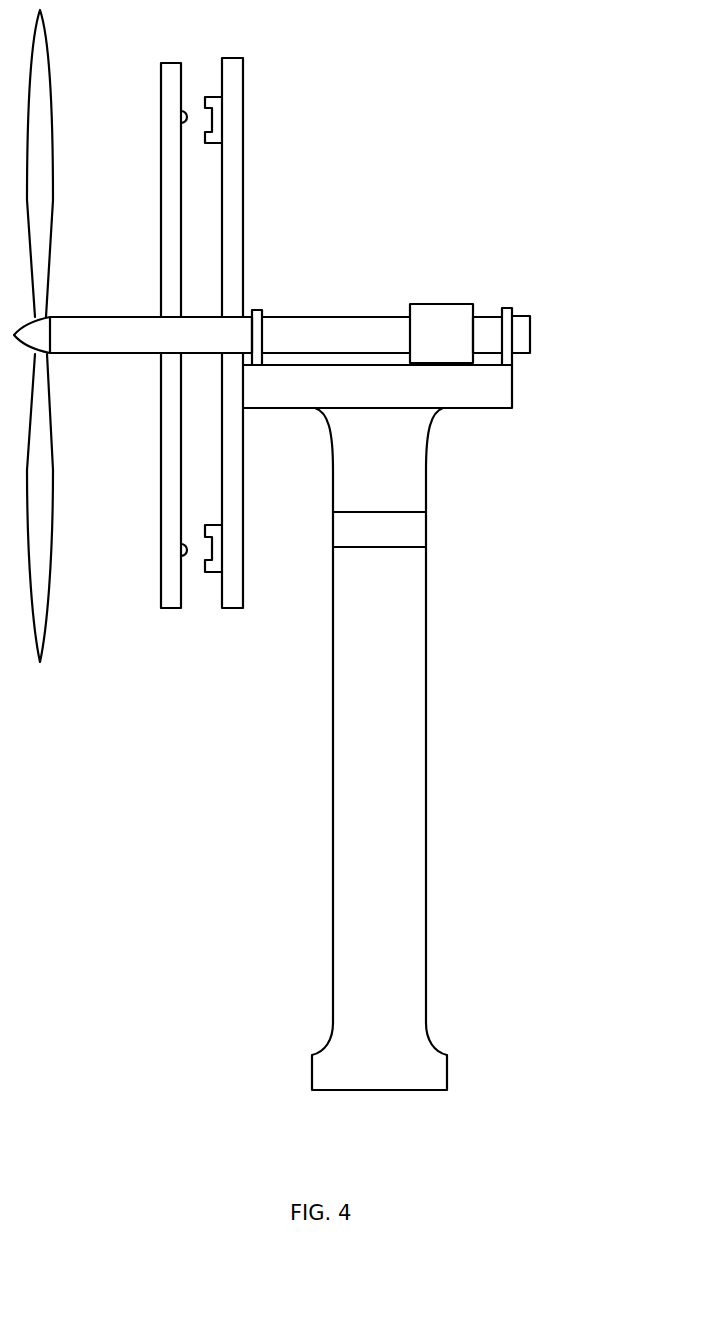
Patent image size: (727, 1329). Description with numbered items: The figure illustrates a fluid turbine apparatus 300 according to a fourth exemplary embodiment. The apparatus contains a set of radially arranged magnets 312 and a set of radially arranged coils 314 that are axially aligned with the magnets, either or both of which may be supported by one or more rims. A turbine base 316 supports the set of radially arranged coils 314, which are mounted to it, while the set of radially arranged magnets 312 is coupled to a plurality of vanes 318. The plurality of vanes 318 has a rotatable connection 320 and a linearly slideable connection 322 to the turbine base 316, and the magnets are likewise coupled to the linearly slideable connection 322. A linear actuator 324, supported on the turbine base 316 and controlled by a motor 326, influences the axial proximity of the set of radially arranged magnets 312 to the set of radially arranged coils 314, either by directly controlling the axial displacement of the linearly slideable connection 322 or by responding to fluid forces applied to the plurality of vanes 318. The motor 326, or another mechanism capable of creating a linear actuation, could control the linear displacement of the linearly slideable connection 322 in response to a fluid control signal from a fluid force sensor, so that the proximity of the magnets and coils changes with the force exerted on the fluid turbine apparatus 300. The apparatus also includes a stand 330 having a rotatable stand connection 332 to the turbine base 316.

The fluid turbine apparatus 300 is at (511, 158).
The set of radially arranged magnets 312 is at (182, 118).
The set of radially arranged coils 314 is at (212, 120).
The turbine base 316 is at (498, 395).
The plurality of vanes 318 is at (52, 63).
The rotatable connection 320 is at (318, 325).
The linearly slideable connection 322 is at (250, 300).
The linear actuator 324 is at (434, 295).
The motor 326 is at (466, 318).
The stand 330 is at (417, 620).
The rotatable stand connection 332 is at (418, 529).